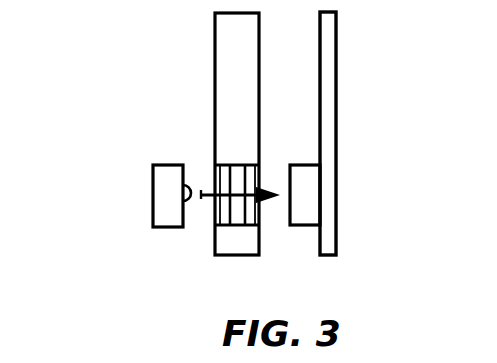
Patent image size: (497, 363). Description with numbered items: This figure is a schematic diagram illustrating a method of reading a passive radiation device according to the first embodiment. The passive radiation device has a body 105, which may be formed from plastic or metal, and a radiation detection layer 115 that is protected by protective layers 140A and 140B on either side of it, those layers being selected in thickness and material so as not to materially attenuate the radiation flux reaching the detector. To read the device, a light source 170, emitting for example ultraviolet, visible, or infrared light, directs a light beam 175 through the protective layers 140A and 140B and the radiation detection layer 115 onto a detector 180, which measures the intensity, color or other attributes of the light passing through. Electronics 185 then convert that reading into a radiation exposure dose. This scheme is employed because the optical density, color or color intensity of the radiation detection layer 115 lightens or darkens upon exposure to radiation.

The body 105 is at (255, 60).
The radiation detection layer 115 is at (237, 172).
The protective layer 140A is at (253, 222).
The protective layer 140B is at (222, 212).
The light source 170 is at (160, 188).
The light beam 175 is at (209, 189).
The detector 180 is at (305, 187).
The electronics 185 is at (330, 119).